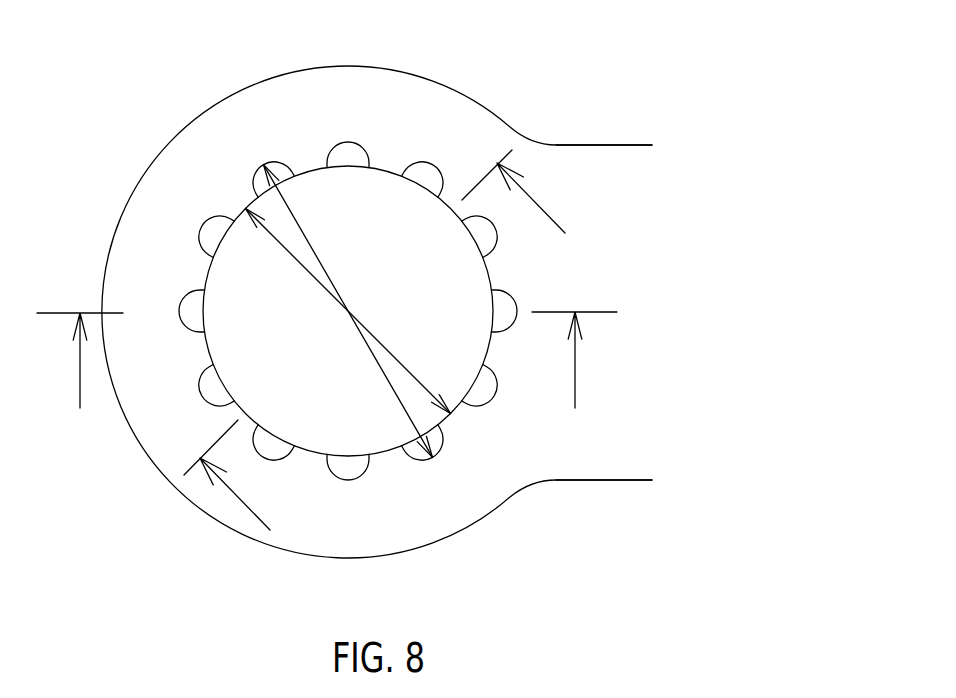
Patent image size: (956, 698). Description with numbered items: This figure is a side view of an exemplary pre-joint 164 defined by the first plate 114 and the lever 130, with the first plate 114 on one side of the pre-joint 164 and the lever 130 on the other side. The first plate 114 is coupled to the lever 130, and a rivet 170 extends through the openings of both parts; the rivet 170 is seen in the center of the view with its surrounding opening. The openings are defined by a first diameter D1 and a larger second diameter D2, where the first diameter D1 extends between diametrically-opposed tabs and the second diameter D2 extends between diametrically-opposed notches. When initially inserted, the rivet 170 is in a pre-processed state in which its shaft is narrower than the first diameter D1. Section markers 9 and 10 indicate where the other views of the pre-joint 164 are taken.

The pre-joint 164 is at (523, 55).
The rivet 170 is at (417, 278).
The first plate 114 is at (552, 567).
The lever 130 is at (613, 480).
The section line 10 is at (379, 340).
The section line 9 is at (327, 360).
The first diameter D1 is at (300, 263).
The second diameter D2 is at (385, 347).